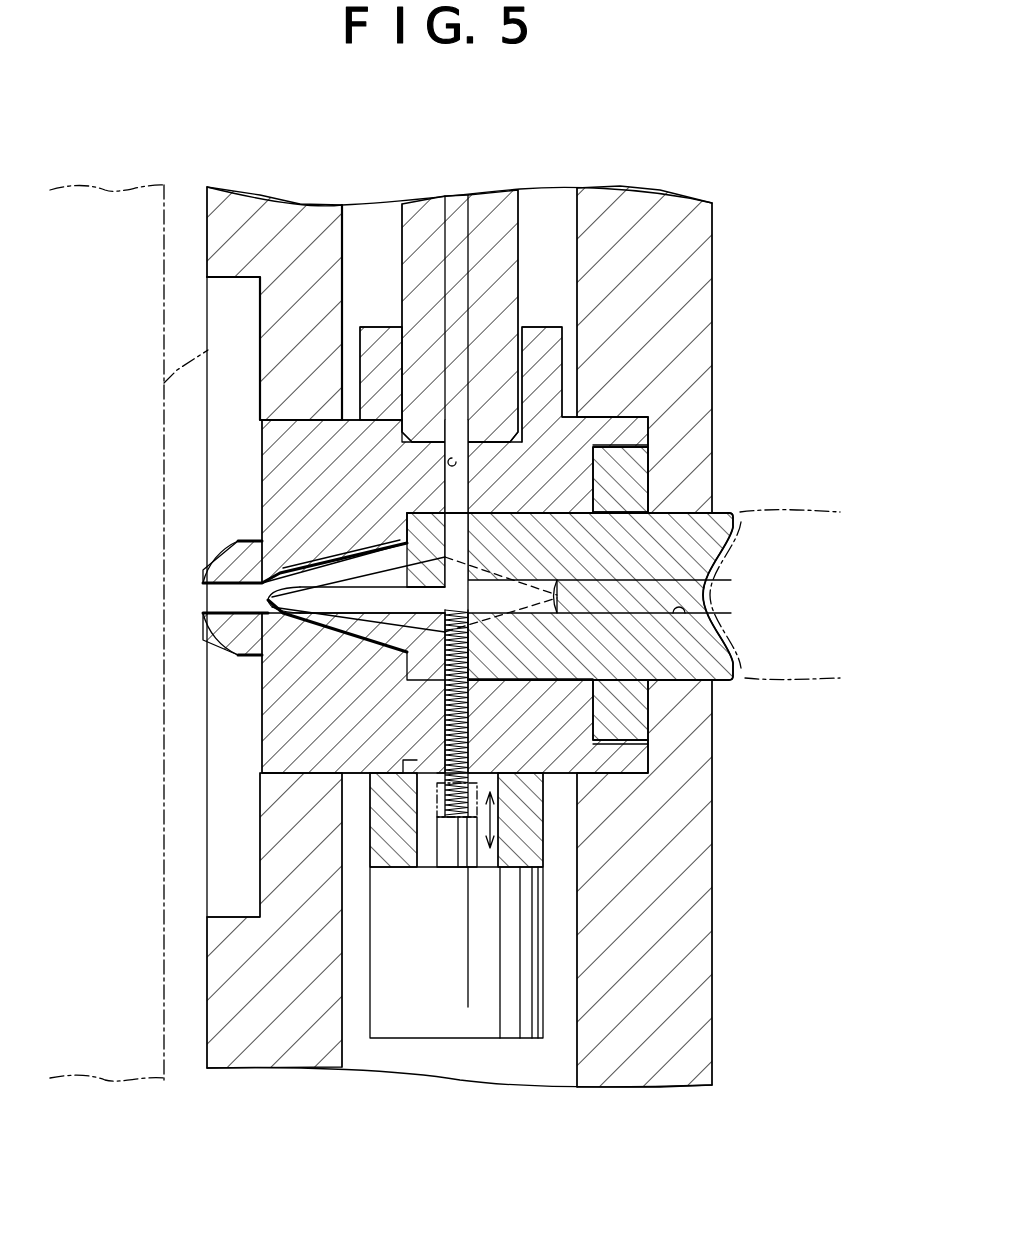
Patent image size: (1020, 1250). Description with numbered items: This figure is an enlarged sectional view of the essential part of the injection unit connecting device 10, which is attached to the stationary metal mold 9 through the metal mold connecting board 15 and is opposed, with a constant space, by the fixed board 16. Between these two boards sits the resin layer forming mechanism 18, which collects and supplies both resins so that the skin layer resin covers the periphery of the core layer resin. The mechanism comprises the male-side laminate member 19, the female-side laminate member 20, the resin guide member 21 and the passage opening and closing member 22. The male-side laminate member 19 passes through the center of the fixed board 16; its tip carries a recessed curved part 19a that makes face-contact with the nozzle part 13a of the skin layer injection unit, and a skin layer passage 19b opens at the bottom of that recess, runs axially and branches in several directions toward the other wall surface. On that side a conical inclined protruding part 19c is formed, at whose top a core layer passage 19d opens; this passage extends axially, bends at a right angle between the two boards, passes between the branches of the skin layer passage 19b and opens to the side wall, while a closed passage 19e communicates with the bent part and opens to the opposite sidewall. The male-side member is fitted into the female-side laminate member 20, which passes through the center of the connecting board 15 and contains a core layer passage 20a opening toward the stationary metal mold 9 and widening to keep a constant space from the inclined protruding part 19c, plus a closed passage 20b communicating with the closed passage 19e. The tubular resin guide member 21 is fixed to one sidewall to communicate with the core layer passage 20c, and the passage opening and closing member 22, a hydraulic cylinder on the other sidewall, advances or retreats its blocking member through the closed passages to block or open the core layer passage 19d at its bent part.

The stationary metal mold 9 is at (119, 193).
The injection unit connecting device 10 is at (724, 195).
The nozzle part 13a is at (800, 512).
The metal mold connecting board 15 is at (295, 218).
The fixed board 16 is at (693, 282).
The resin layer forming mechanism 18 is at (657, 400).
The male-side laminate member 19 is at (731, 512).
The recessed curved part 19a is at (717, 633).
The skin layer passage 19b is at (715, 688).
The inclined protruding part 19c is at (262, 545).
The core layer passage 19d is at (300, 611).
The closed passage 19e is at (420, 677).
The female-side laminate member 20 is at (270, 706).
The core layer passage 20a is at (300, 592).
The closed passage 20b is at (447, 722).
The core layer passage 20c is at (447, 463).
The resin guide member 21 is at (497, 205).
The passage opening and closing member 22 is at (446, 1020).